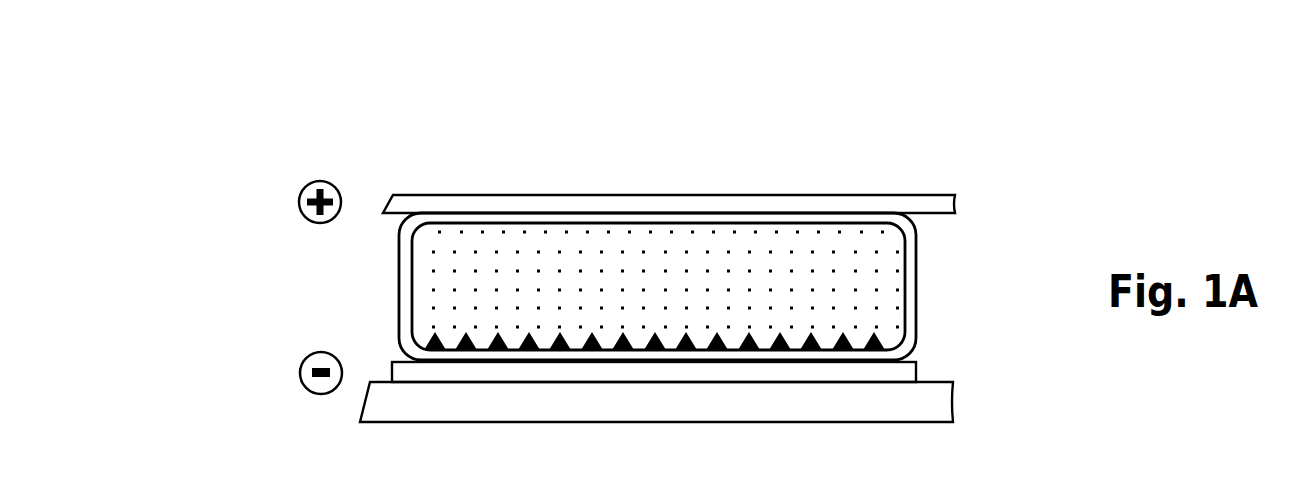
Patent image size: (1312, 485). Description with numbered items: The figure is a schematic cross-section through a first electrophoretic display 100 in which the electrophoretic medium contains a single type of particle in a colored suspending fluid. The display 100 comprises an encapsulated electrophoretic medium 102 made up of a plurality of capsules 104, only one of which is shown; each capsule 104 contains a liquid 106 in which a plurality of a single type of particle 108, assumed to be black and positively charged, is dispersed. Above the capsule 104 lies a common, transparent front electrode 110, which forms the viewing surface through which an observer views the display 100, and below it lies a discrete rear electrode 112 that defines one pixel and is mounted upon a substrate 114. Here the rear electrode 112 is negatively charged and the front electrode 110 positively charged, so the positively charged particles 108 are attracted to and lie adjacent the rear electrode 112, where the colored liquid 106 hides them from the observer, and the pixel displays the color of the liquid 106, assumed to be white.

The electrophoretic display 100 is at (462, 118).
The encapsulated electrophoretic medium 102 is at (931, 253).
The capsule 104 is at (915, 302).
The liquid 106 is at (808, 295).
The particle 108 is at (628, 340).
The front electrode 110 is at (705, 193).
The rear electrode 112 is at (917, 367).
The substrate 114 is at (953, 393).